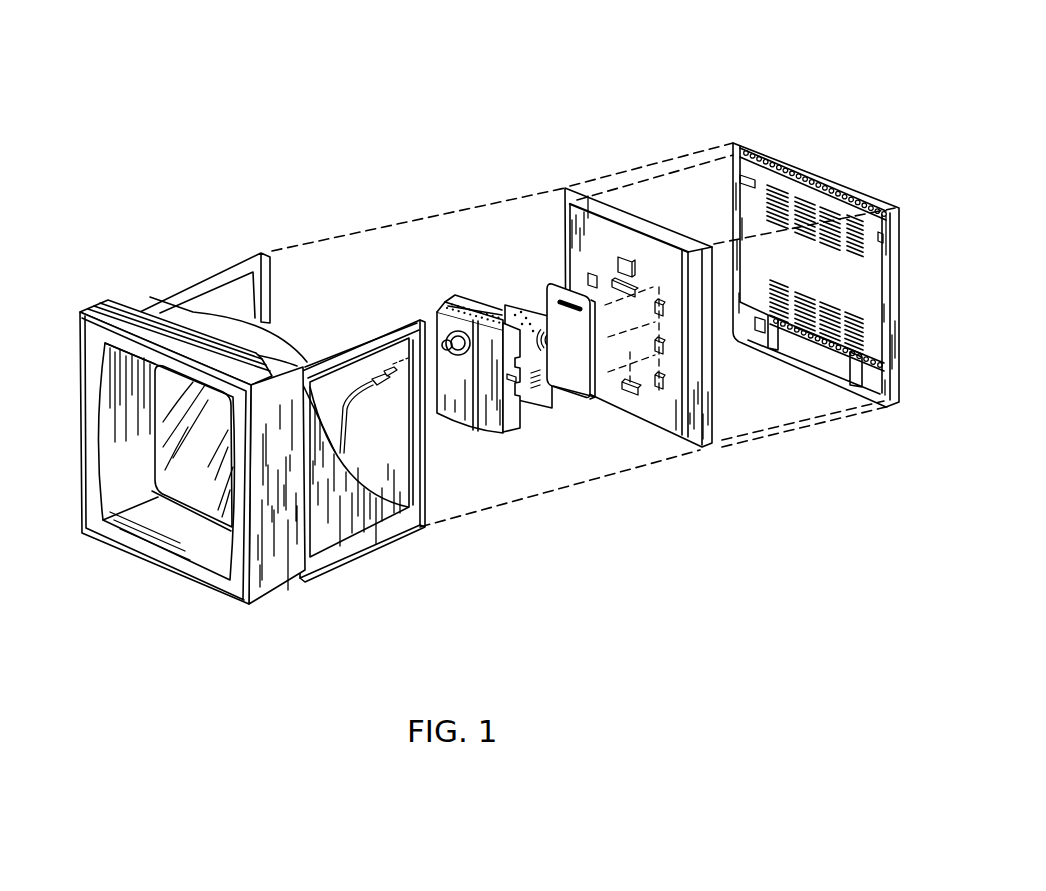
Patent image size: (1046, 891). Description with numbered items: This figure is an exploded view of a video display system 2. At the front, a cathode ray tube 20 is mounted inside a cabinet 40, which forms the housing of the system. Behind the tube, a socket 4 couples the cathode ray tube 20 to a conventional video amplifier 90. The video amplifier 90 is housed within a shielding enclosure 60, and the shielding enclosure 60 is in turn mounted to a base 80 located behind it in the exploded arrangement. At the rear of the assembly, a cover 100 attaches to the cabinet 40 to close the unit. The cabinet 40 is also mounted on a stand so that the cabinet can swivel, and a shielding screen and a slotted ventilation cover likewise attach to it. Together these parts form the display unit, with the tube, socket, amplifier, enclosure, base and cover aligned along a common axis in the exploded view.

The video display system 2 is at (489, 316).
The socket 4 is at (443, 310).
The cathode ray tube 20 is at (296, 338).
The cabinet 40 is at (346, 553).
The shielding enclosure 60 is at (467, 377).
The base 80 is at (600, 400).
The video amplifier 90 is at (526, 304).
The cover 100 is at (781, 363).